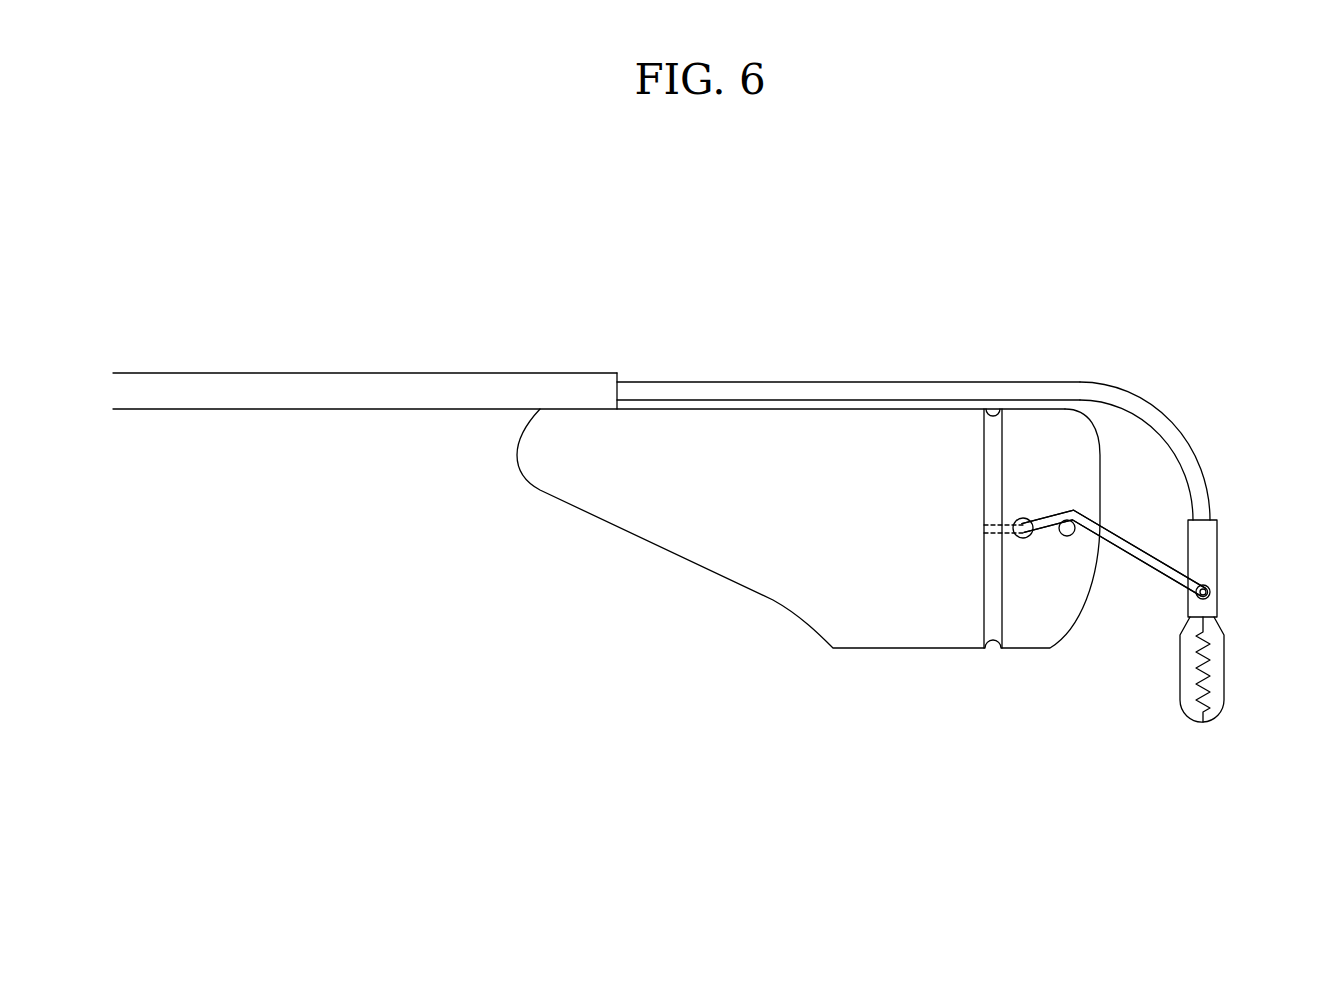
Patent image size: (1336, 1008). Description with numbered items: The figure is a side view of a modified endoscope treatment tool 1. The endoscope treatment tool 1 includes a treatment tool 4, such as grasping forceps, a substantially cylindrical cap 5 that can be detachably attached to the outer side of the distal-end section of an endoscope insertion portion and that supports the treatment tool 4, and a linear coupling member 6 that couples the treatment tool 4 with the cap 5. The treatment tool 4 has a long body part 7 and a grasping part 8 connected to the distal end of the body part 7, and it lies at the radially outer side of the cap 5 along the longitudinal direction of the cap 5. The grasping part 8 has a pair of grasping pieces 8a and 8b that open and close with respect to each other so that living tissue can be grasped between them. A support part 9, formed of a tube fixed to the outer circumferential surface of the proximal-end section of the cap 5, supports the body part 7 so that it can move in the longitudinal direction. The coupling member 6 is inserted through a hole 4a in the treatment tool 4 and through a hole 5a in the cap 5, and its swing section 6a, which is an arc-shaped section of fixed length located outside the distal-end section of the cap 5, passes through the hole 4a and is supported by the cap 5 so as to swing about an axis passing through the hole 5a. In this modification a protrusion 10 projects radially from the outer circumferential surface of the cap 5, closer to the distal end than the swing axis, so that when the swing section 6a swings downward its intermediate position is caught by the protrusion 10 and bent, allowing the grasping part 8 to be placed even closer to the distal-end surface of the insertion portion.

The endoscope treatment tool 1 is at (560, 242).
The treatment tool 4 is at (1213, 428).
The hole 4a is at (1211, 592).
The cap 5 is at (886, 650).
The hole 5a is at (1036, 540).
The coupling member 6 is at (1160, 590).
The swing section 6a is at (1133, 546).
The body part 7 is at (832, 381).
The grasping part 8 is at (1204, 743).
The grasping piece 8a is at (1215, 712).
The grasping piece 8b is at (1190, 713).
The support part 9 is at (380, 372).
The protrusion 10 is at (1073, 534).